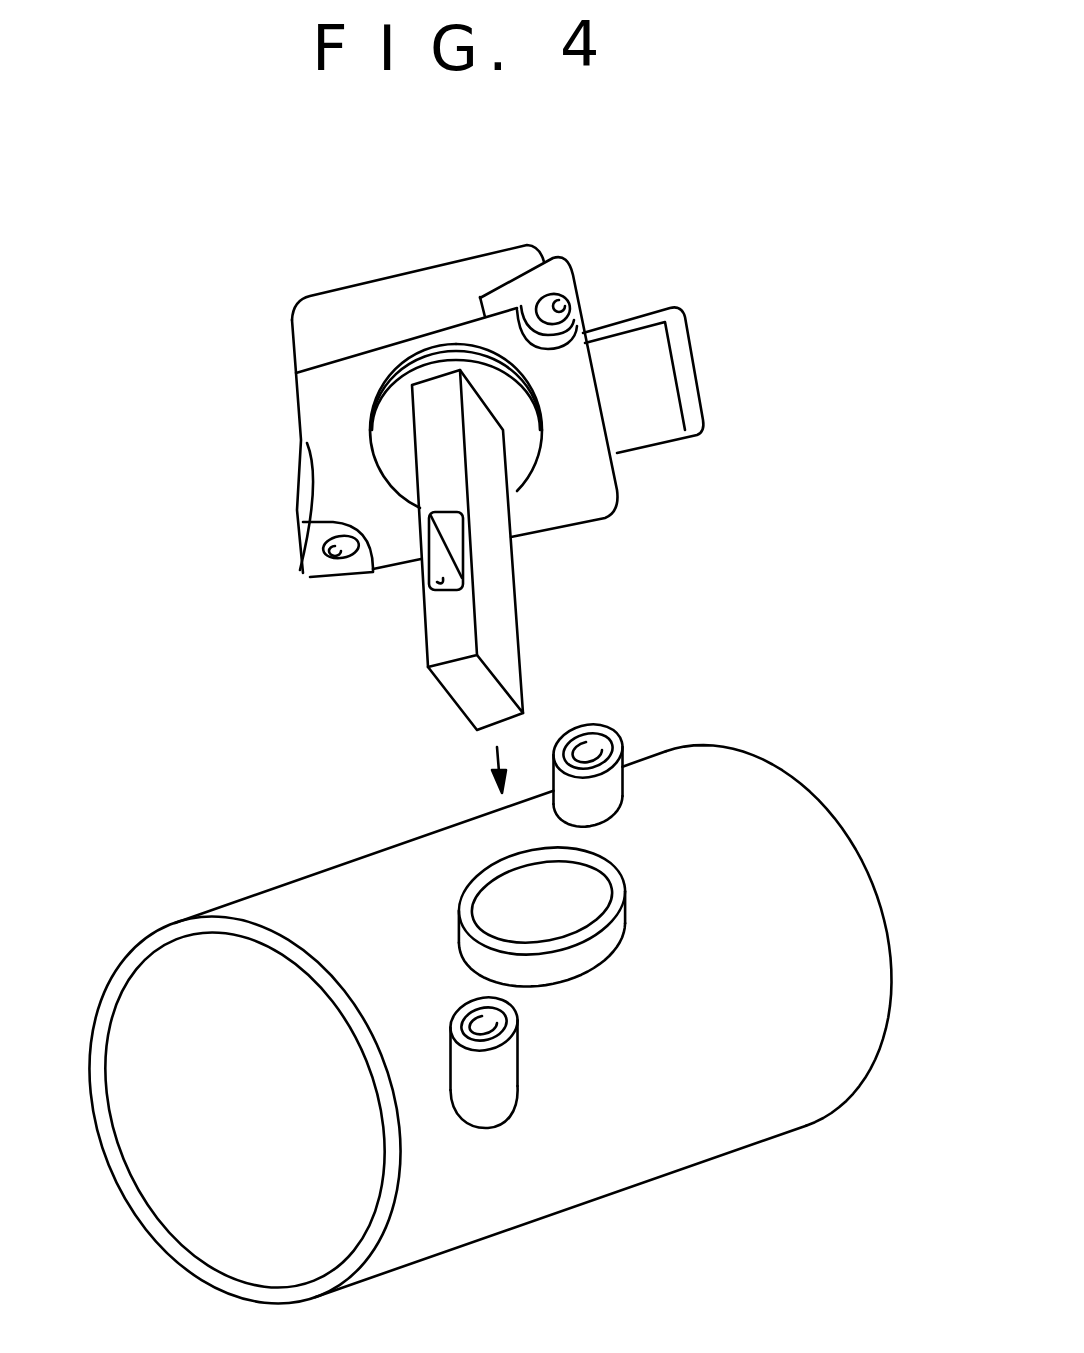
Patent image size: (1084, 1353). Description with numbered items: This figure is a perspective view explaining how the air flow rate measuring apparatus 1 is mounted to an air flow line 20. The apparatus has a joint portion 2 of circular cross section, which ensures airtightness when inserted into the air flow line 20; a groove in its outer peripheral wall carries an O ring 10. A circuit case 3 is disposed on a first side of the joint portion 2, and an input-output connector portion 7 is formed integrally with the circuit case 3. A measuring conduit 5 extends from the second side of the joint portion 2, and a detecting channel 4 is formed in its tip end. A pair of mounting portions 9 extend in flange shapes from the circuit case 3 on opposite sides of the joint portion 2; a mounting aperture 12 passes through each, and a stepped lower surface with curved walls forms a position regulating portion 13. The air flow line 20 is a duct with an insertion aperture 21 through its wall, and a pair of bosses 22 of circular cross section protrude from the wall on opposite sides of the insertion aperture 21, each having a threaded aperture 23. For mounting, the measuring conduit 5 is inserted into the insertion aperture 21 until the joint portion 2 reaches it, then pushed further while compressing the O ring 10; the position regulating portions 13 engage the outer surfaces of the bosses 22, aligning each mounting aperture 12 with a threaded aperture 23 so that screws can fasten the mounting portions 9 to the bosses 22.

The air flow rate measuring apparatus 1 is at (281, 247).
The joint portion 2 is at (390, 443).
The circuit case 3 is at (300, 333).
The detecting channel 4 is at (432, 582).
The measuring conduit 5 is at (433, 637).
The input-output connector portion 7 is at (658, 432).
The mounting portions 9 is at (297, 518).
The O ring 10 is at (373, 388).
The mounting aperture 12 is at (316, 556).
The position regulating portions 13 is at (325, 537).
The air flow line 20 is at (264, 892).
The insertion aperture 21 is at (467, 884).
The bosses 22 is at (626, 737).
The threaded aperture 23 is at (588, 748).